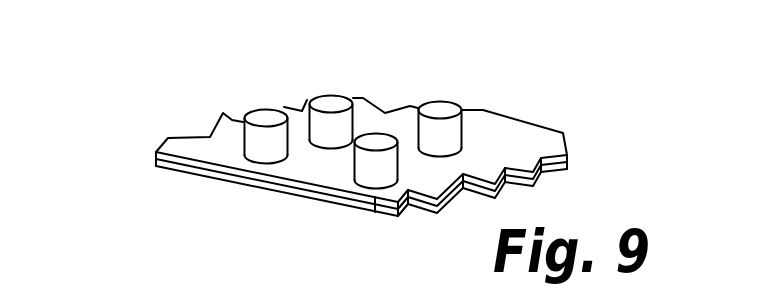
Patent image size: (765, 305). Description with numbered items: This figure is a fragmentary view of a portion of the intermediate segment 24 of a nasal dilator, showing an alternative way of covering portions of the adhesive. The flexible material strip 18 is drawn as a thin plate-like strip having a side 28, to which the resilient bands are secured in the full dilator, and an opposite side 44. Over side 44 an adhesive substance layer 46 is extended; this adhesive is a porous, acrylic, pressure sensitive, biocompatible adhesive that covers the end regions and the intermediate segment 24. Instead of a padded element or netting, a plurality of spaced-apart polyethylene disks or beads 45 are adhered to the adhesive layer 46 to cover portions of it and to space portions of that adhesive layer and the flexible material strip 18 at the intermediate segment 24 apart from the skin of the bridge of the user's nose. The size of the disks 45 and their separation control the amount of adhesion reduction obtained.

The flexible material strip 18 is at (200, 177).
The intermediate segment 24 is at (166, 140).
The side 28 is at (297, 195).
The side 44 is at (550, 160).
The polyethylene disks 45 is at (433, 107).
The adhesive substance layer 46 is at (483, 137).